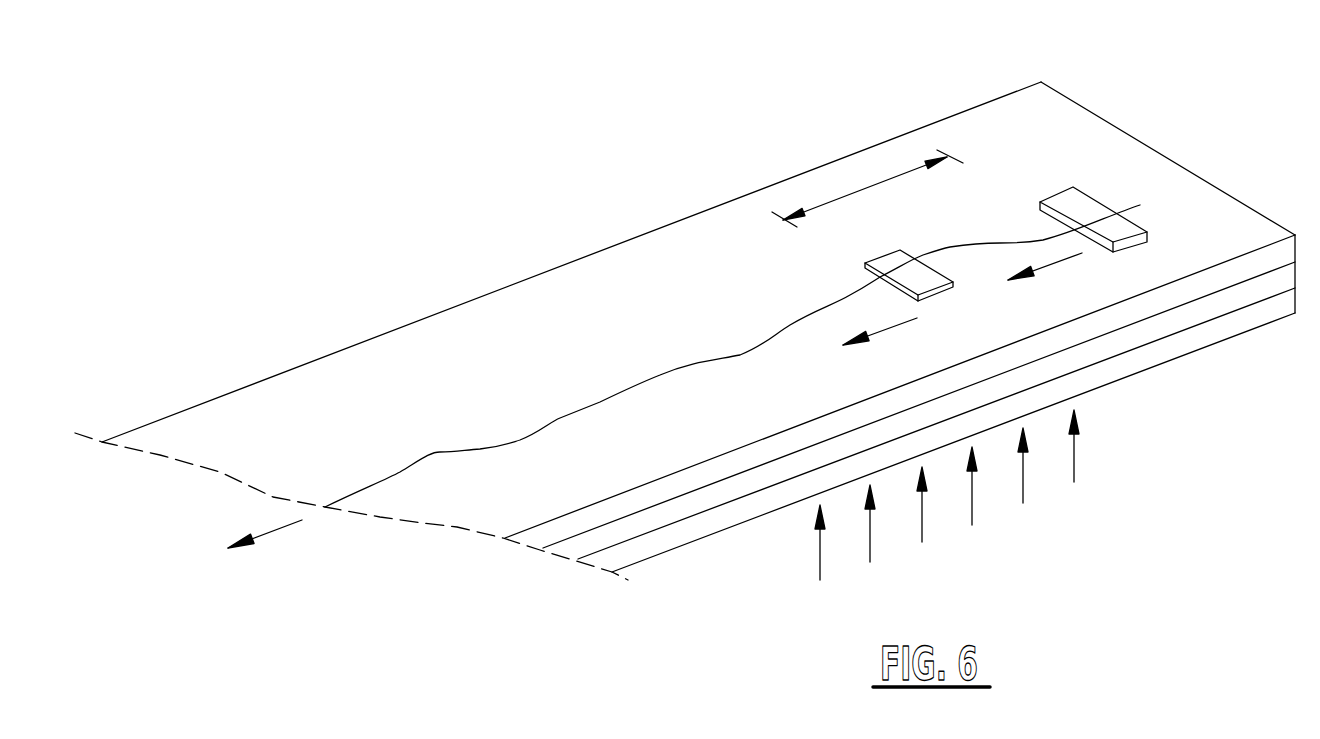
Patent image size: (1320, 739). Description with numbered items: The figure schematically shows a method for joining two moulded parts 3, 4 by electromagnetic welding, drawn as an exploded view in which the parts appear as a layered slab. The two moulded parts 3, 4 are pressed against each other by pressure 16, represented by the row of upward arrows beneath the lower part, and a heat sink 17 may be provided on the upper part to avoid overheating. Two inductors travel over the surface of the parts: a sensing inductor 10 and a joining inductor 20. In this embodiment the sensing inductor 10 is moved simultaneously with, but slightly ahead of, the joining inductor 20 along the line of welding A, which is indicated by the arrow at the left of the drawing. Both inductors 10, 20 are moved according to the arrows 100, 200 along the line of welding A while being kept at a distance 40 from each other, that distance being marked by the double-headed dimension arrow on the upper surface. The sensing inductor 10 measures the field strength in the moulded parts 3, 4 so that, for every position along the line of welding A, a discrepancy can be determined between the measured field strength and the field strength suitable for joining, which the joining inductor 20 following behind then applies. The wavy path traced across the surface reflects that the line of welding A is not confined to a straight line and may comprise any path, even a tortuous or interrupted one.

The moulded part 3 is at (1240, 293).
The moulded part 4 is at (693, 530).
The sensing inductor 10 is at (863, 263).
The pressure 16 is at (1075, 448).
The heat sink 17 is at (892, 152).
The joining inductor 20 is at (1085, 205).
The distance 40 is at (855, 192).
The arrow 100 is at (900, 325).
The arrow 200 is at (1062, 265).
The line of welding A is at (282, 530).